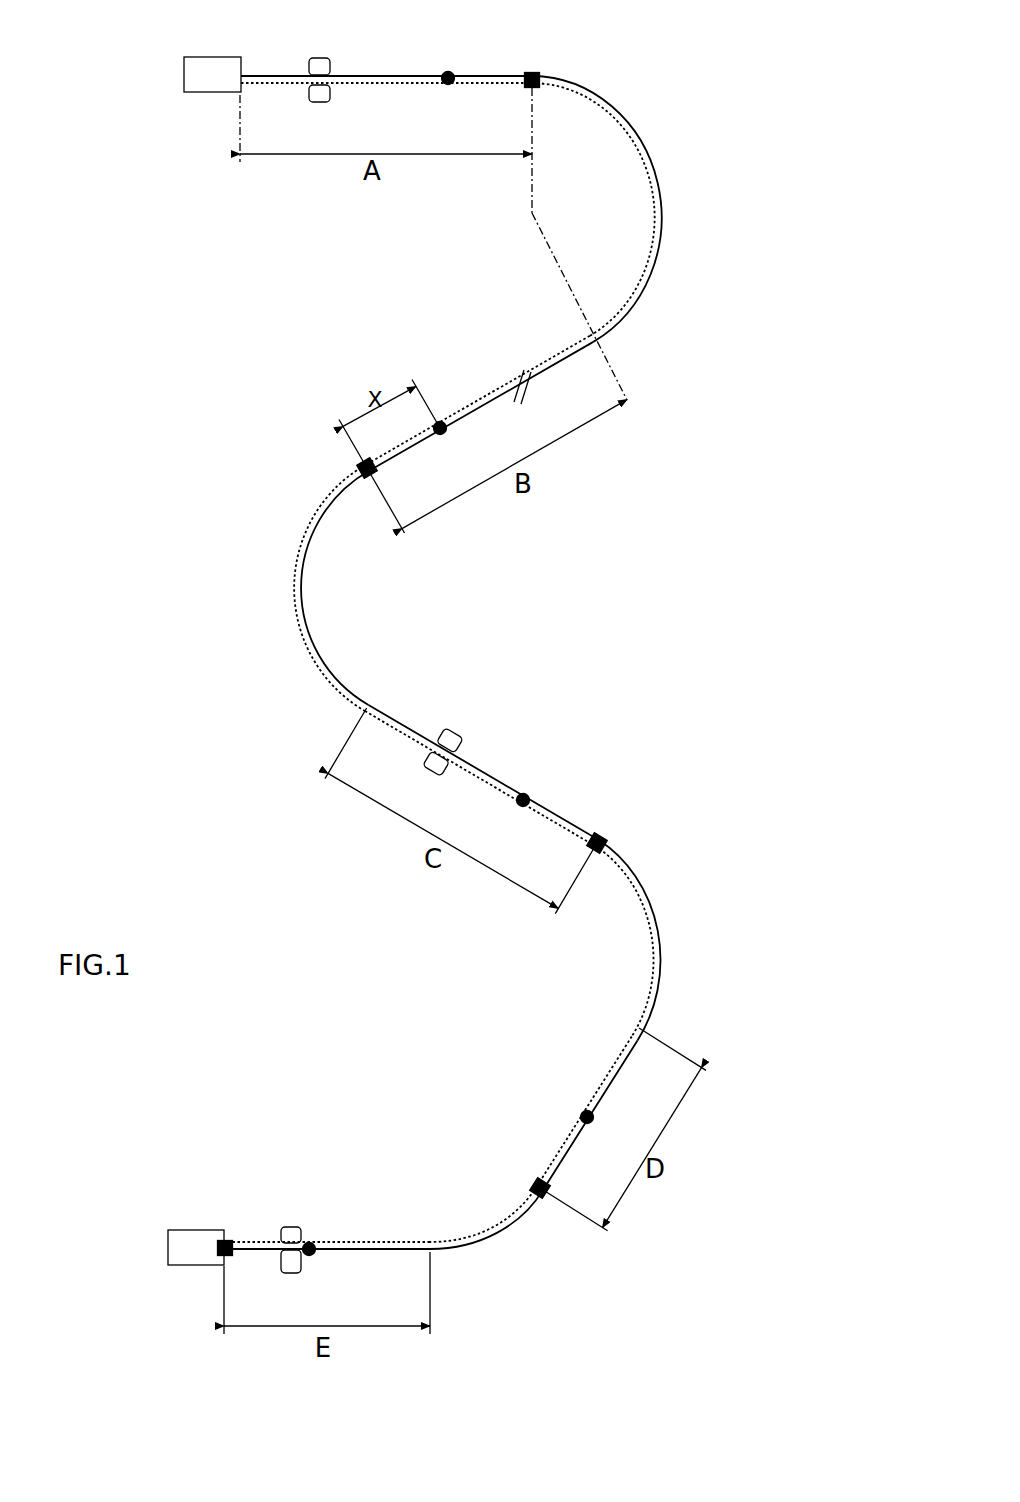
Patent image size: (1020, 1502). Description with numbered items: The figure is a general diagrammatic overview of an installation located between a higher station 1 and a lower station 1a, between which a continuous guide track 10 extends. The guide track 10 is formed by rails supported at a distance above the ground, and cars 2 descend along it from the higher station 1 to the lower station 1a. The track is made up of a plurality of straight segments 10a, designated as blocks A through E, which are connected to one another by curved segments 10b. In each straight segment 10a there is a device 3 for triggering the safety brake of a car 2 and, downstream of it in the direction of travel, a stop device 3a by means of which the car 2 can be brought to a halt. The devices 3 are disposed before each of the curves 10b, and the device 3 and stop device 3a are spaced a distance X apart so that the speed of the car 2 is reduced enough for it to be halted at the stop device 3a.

The higher station 1 is at (212, 72).
The lower station 1a is at (197, 1250).
The car 2 is at (321, 63).
The device for triggering safety brakes 3 is at (453, 72).
The stop device 3a is at (538, 72).
The guide track 10 is at (466, 627).
The straight segment 10a is at (390, 75).
The curved segment 10b is at (665, 217).